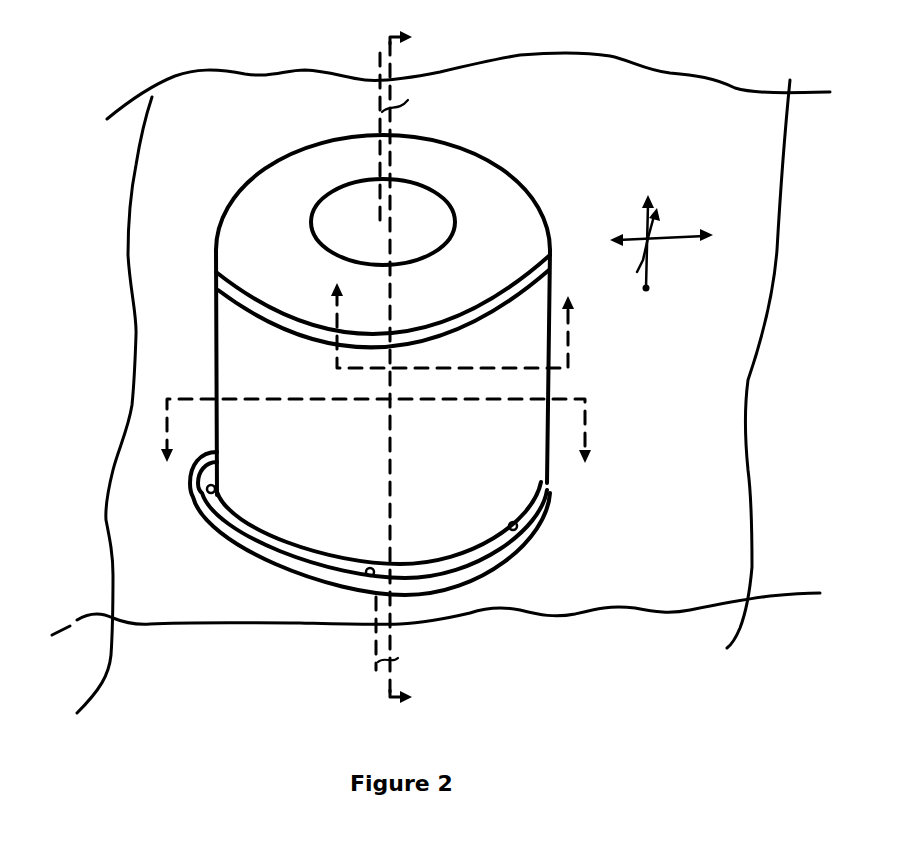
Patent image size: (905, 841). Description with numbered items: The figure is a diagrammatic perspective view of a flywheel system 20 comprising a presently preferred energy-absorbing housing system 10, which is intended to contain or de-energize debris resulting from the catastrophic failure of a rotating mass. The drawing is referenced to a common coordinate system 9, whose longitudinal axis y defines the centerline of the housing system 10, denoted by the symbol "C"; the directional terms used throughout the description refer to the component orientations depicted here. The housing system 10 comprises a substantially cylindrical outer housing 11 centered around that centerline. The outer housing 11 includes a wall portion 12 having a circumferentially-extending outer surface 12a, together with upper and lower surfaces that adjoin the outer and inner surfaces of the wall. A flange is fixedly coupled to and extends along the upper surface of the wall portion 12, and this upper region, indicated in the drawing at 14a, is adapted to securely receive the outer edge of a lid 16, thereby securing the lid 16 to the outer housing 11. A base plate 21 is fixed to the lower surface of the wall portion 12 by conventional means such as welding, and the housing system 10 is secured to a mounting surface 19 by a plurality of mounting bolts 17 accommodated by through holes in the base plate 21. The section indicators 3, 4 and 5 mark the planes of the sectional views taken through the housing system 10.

The section line 3- 3 is at (411, 369).
The section line 4- 4 is at (447, 315).
The section line 5- 5 is at (373, 448).
The coordinate system 9 is at (708, 200).
The energy-absorbing housing system 10 is at (200, 292).
The outer housing 11 is at (204, 377).
The wall portion 12 is at (354, 407).
The outer surface 12a is at (478, 450).
The annular band 14a is at (250, 308).
The lid 16 is at (298, 170).
The mounting bolts 17 is at (193, 505).
The mounting surface 19 is at (165, 133).
The flywheel system 20 is at (550, 126).
The base plate 21 is at (550, 493).